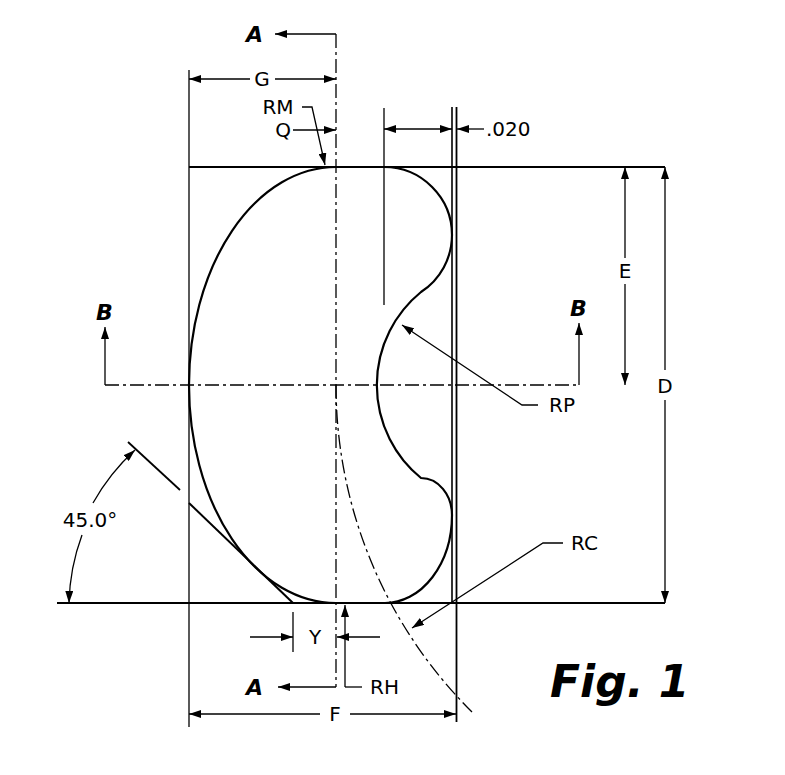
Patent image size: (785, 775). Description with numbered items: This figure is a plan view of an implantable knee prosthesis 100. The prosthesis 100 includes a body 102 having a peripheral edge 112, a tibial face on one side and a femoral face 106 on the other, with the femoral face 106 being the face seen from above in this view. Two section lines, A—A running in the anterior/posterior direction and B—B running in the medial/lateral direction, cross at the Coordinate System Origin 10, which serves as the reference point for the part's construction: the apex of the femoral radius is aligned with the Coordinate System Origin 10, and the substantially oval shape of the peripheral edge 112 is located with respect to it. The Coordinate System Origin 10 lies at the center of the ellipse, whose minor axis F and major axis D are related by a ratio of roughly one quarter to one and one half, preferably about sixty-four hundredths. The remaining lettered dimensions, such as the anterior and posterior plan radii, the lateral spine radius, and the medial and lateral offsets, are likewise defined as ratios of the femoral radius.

The implantable knee prosthesis 100 is at (453, 90).
The body 102 is at (238, 227).
The femoral face 106 is at (232, 293).
The peripheral edge 112 is at (188, 398).
The coordinate system origin 10 is at (336, 385).